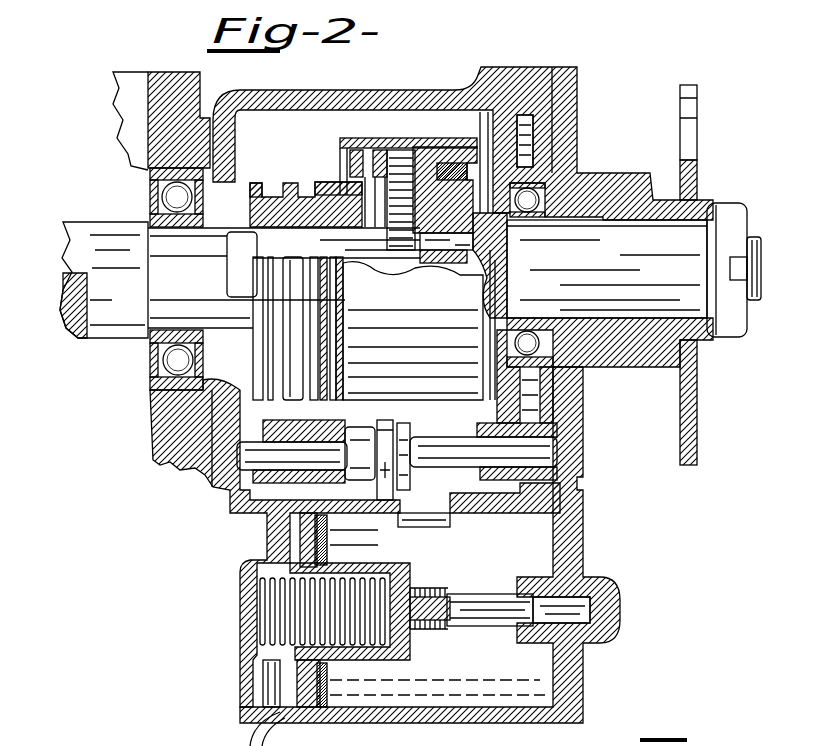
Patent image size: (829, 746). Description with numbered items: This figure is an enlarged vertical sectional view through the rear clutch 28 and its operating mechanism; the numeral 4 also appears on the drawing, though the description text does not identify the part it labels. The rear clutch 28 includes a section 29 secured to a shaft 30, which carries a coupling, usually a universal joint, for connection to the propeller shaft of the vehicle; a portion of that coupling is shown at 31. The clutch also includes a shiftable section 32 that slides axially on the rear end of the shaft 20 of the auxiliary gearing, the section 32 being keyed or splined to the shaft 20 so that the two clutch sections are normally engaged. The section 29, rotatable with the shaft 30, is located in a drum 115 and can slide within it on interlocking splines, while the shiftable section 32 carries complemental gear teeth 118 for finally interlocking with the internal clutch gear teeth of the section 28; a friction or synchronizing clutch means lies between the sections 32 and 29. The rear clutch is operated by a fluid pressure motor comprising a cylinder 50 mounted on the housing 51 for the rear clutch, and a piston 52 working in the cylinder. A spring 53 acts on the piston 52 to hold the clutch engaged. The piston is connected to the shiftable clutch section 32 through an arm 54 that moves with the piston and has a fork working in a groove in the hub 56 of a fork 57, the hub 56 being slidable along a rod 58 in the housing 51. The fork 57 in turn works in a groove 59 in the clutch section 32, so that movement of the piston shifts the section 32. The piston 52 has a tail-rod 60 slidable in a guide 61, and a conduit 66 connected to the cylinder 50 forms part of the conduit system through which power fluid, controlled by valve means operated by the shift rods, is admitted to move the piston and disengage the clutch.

The bolt 4 is at (388, 418).
The shaft 20 is at (125, 222).
The rear clutch 28 is at (413, 128).
The section 29 is at (423, 167).
The shaft 30 is at (617, 270).
The portion of the coupling 31 is at (697, 143).
The shiftable section 32 is at (302, 203).
The cylinder 50 is at (267, 543).
The housing 51 is at (372, 89).
The piston 52 is at (307, 537).
The spring 53 is at (267, 623).
The arm 54 is at (401, 513).
The hub 56 is at (365, 426).
The fork 57 is at (277, 398).
The rod 58 is at (433, 443).
The groove 59 is at (252, 196).
The tail-rod 60 is at (463, 618).
The guide 61 is at (577, 580).
The conduit 66 is at (253, 738).
The drum 115 is at (387, 152).
The gear teeth 118 is at (327, 182).